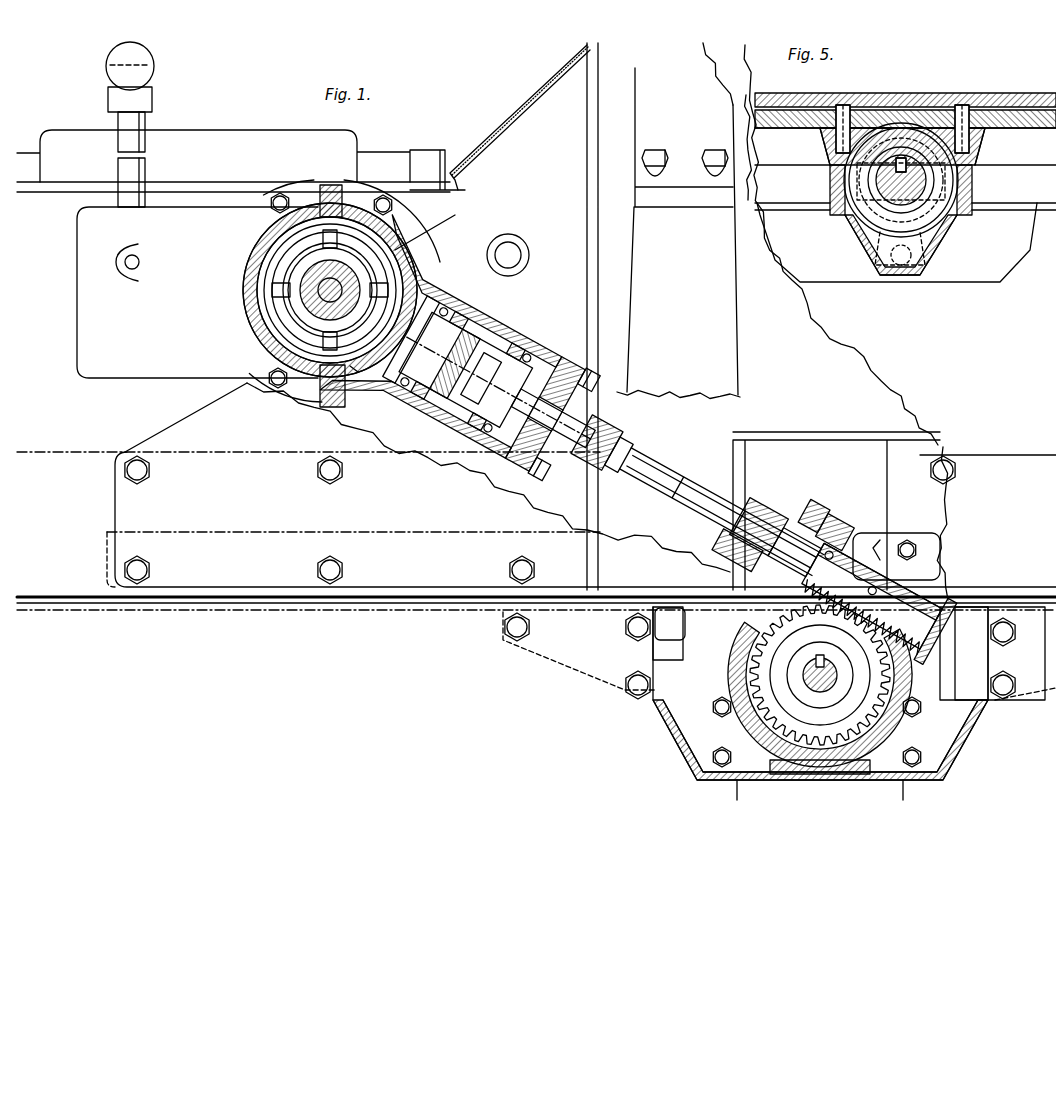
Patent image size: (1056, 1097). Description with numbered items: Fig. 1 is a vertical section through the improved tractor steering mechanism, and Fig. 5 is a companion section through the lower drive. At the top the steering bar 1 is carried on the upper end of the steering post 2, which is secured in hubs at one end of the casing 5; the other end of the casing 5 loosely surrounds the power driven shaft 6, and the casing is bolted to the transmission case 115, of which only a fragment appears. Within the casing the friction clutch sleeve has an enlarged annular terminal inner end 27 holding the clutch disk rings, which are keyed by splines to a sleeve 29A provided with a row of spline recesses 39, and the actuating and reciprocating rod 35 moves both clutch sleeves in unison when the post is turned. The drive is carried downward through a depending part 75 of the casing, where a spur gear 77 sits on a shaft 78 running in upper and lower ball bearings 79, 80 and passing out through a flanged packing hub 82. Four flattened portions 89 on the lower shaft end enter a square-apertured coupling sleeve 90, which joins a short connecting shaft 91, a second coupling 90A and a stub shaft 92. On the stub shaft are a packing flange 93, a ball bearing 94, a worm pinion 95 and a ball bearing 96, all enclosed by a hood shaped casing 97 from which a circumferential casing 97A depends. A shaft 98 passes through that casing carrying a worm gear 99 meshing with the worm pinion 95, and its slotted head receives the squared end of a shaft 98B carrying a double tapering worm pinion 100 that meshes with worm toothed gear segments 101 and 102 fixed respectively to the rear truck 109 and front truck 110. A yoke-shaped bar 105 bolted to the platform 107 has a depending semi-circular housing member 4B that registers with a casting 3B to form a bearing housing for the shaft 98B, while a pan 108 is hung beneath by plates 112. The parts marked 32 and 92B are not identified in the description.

In FIG. 1, the steering bar 1 is at (156, 58).
In FIG. 1, the steering post 2 is at (146, 124).
In FIG. 1, the casing 5 is at (77, 268).
In FIG. 1, the shaft 6 is at (300, 284).
In FIG. 1, the enlarged annular terminal inner end 27 is at (300, 231).
In FIG. 1, the ring 32 is at (380, 252).
In FIG. 1, the actuating and reciprocating rod 35 is at (305, 297).
In FIG. 1, the spline recesses 39 is at (345, 375).
In FIG. 1, the sleeve 29A is at (403, 263).
In FIG. 1, the transmission case 115 is at (490, 155).
In FIG. 1, the ball bearing 79 is at (458, 323).
In FIG. 1, the ball bearing 80 is at (522, 345).
In FIG. 1, the shaft 78 is at (498, 388).
In FIG. 1, the depending part 75 is at (413, 413).
In FIG. 1, the spur gear 77 is at (452, 438).
In FIG. 1, the flanged packing hub 82 is at (550, 465).
In FIG. 1, the flattened portions 89 is at (582, 480).
In FIG. 1, the coupling sleeve 90 is at (596, 440).
In FIG. 1, the collar 92B is at (622, 470).
In FIG. 1, the connecting shaft 91 is at (662, 476).
In FIG. 1, the coupling 90A is at (742, 522).
In FIG. 1, the stub shaft 92 is at (792, 535).
In FIG. 1, the packing flange 93 is at (818, 522).
In FIG. 1, the ball bearing 94 is at (847, 536).
In FIG. 1, the worm pinion 95 is at (870, 598).
In FIG. 1, the ball bearing 96 is at (930, 596).
In FIG. 1, the hood shaped casing 97 is at (922, 560).
In FIG. 1, the circumferential casing 97A is at (920, 700).
In FIG. 1, the shaft 98 is at (812, 668).
In FIG. 1, the worm gear 99 is at (820, 686).
In FIG. 1, the worm toothed gear segment 101 is at (680, 680).
In FIG. 5, the worm toothed gear segment 101 is at (830, 182).
In FIG. 1, the worm toothed gear segment 102 is at (968, 680).
In FIG. 5, the worm toothed gear segment 102 is at (965, 182).
In FIG. 1, the rear truck 109 is at (1010, 745).
In FIG. 1, the front truck 110 is at (640, 745).
In FIG. 1, the plates 112 is at (715, 730).
In FIG. 5, the bar 105 is at (893, 105).
In FIG. 5, the platform 107 is at (978, 93).
In FIG. 5, the worm pinion 100 is at (912, 150).
In FIG. 5, the semi-circular housing member 4B is at (945, 168).
In FIG. 5, the shaft 98B is at (901, 190).
In FIG. 5, the casting 3B is at (940, 225).
In FIG. 5, the pan 108 is at (897, 283).